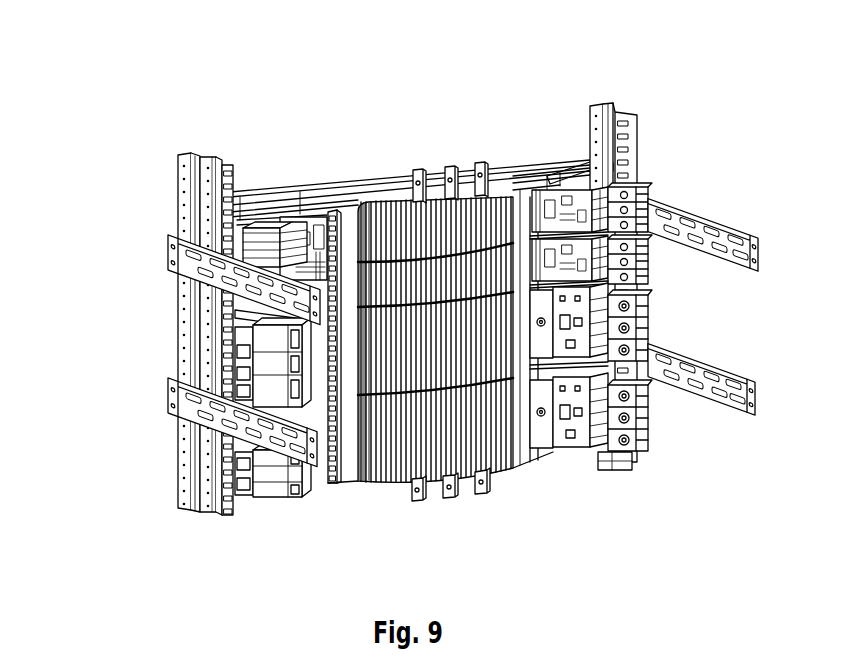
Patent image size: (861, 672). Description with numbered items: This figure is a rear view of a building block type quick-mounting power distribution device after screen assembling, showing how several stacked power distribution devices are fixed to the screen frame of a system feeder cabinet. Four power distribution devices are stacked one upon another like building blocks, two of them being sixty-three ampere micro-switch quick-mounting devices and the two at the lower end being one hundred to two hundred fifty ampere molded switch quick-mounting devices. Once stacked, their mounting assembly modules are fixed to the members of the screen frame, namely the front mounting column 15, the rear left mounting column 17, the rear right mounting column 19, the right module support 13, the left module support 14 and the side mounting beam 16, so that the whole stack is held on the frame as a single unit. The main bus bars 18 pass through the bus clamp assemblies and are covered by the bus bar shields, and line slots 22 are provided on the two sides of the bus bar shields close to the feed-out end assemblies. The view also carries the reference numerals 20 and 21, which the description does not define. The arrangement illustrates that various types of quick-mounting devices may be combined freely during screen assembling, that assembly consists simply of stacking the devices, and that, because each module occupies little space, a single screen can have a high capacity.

The right module support 13 is at (185, 497).
The left module support 14 is at (628, 462).
The front mounting column 15 is at (185, 203).
The side mounting beam 16 is at (167, 395).
The rear left mounting column 17 is at (628, 155).
The main bus bar 18 is at (450, 167).
The rear right mounting column 19 is at (222, 350).
The upper mounting rail 20 is at (636, 195).
The lower mounting rail 21 is at (602, 343).
The line slot 22 is at (350, 467).